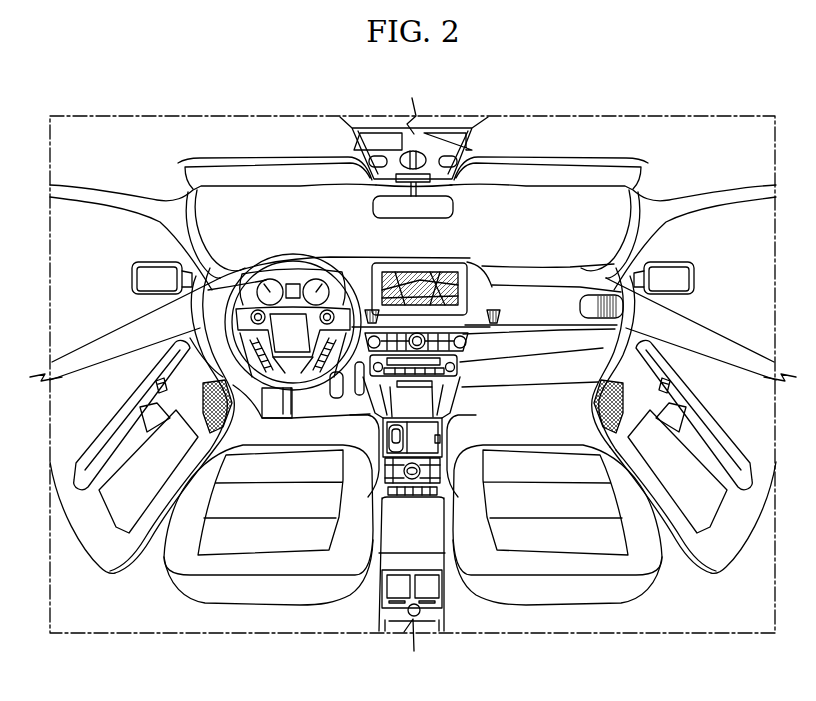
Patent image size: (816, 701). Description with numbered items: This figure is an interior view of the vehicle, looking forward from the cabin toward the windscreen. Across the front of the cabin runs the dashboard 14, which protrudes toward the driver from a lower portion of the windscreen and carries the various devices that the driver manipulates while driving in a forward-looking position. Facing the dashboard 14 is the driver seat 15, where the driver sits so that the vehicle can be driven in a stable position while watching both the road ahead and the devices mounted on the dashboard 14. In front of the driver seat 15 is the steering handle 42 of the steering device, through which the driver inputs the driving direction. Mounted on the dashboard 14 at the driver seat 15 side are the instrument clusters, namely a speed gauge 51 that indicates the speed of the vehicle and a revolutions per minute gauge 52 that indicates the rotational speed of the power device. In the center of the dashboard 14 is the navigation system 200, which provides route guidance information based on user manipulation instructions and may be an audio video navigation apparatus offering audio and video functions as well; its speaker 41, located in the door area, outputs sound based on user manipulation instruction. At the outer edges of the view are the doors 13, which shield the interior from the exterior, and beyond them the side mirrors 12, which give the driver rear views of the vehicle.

The side mirrors 12 is at (147, 277).
The doors 13 is at (73, 430).
The dashboard 14 is at (554, 293).
The driver seat 15 is at (267, 595).
The speaker 41 is at (200, 398).
The steering handle 42 is at (332, 273).
The speed gauge 51 is at (271, 281).
The revolutions per minute (rpm) gauge 52 is at (313, 281).
The navigation system 200 is at (449, 266).